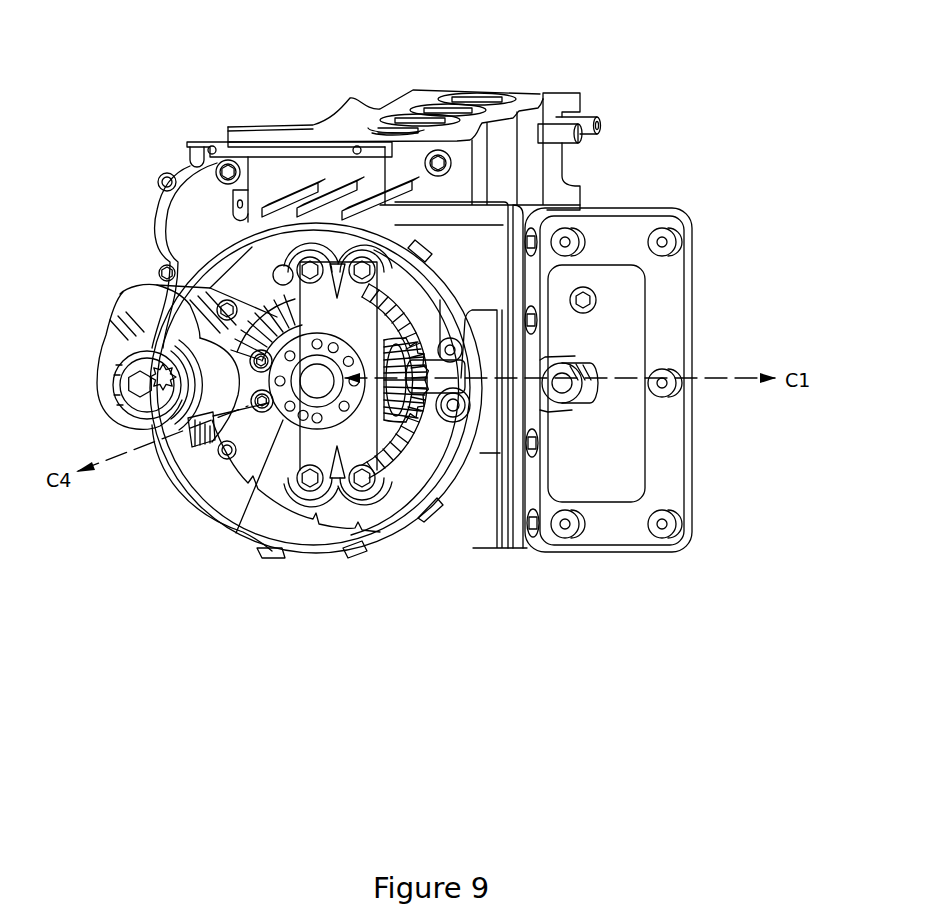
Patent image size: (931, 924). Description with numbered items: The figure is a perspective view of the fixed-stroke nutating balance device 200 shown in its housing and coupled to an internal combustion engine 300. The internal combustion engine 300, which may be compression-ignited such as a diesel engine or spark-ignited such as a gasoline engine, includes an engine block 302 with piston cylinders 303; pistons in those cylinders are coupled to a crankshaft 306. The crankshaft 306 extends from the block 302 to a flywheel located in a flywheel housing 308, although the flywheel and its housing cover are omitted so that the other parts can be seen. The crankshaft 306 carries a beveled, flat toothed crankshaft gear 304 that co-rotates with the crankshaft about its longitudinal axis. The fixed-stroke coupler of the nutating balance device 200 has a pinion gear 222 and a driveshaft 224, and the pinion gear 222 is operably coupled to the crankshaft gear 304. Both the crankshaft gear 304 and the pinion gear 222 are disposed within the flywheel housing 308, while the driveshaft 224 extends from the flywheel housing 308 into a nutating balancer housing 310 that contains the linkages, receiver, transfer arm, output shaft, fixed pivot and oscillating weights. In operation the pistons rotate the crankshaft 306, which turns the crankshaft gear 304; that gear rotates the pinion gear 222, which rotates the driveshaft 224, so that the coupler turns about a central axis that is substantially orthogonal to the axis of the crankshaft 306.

The nutating balance device 200 is at (642, 192).
The pinion gear 222 is at (383, 420).
The driveshaft 224 is at (440, 382).
The internal combustion engine 300 is at (215, 92).
The engine block 302 is at (532, 99).
The piston cylinders 303 is at (378, 128).
The crankshaft gear 304 is at (120, 294).
The crankshaft 306 is at (243, 533).
The flywheel housing 308 is at (190, 493).
The nutating balancer housing 310 is at (676, 468).